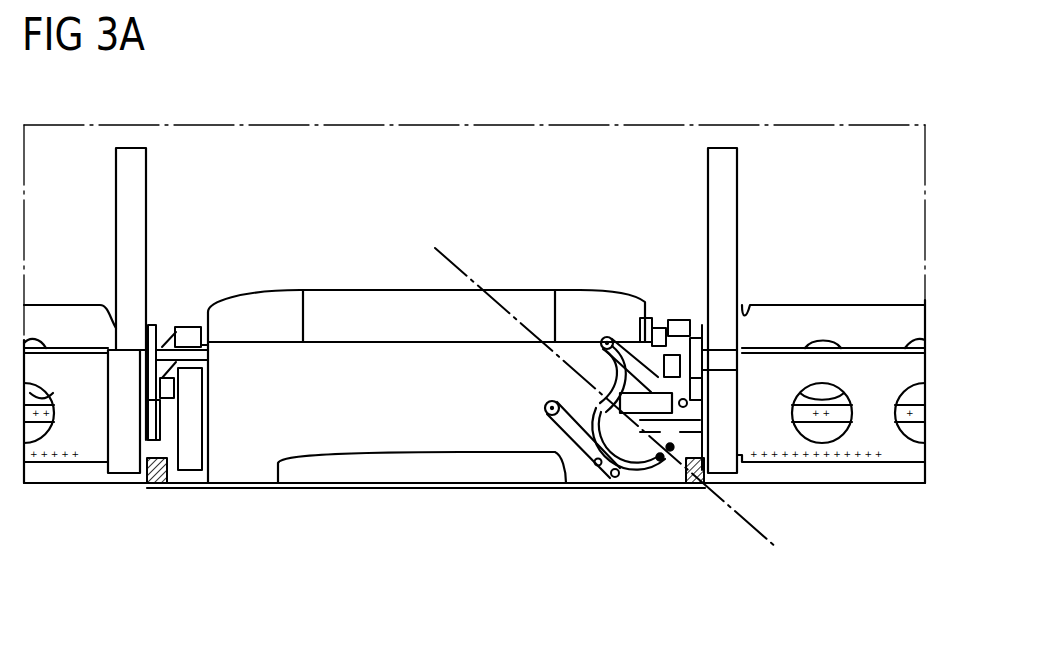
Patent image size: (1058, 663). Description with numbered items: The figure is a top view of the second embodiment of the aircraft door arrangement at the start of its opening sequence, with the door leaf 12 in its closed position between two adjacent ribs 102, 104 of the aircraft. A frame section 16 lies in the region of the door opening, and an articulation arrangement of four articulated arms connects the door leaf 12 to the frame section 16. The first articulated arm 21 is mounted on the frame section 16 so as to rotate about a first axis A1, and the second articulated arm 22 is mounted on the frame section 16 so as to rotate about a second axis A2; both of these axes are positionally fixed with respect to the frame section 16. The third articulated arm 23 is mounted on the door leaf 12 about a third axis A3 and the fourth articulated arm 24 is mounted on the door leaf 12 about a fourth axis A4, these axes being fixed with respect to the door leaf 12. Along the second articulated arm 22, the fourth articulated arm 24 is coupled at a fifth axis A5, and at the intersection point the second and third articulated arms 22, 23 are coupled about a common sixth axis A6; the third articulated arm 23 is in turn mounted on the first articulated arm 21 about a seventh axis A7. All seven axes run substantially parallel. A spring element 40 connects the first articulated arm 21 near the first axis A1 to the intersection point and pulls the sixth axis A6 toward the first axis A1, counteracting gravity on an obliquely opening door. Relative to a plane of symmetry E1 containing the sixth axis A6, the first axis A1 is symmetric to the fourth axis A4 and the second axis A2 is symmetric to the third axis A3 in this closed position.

The door leaf 12 is at (242, 466).
The frame section 16 is at (742, 424).
The first articulated arm 21 is at (645, 372).
The second articulated arm 22 is at (592, 400).
The third articulated arm 23 is at (638, 468).
The fourth articulated arm 24 is at (580, 440).
The spring element 40 is at (650, 415).
The rib 102 is at (722, 163).
The rib 104 is at (133, 162).
The first axis A1 is at (688, 400).
The second axis A2 is at (692, 446).
The third axis A3 is at (662, 462).
The fourth axis A4 is at (614, 480).
The fifth axis A5 is at (548, 417).
The sixth axis A6 is at (595, 466).
The seventh axis A7 is at (619, 380).
The plane of symmetry E1 is at (775, 545).